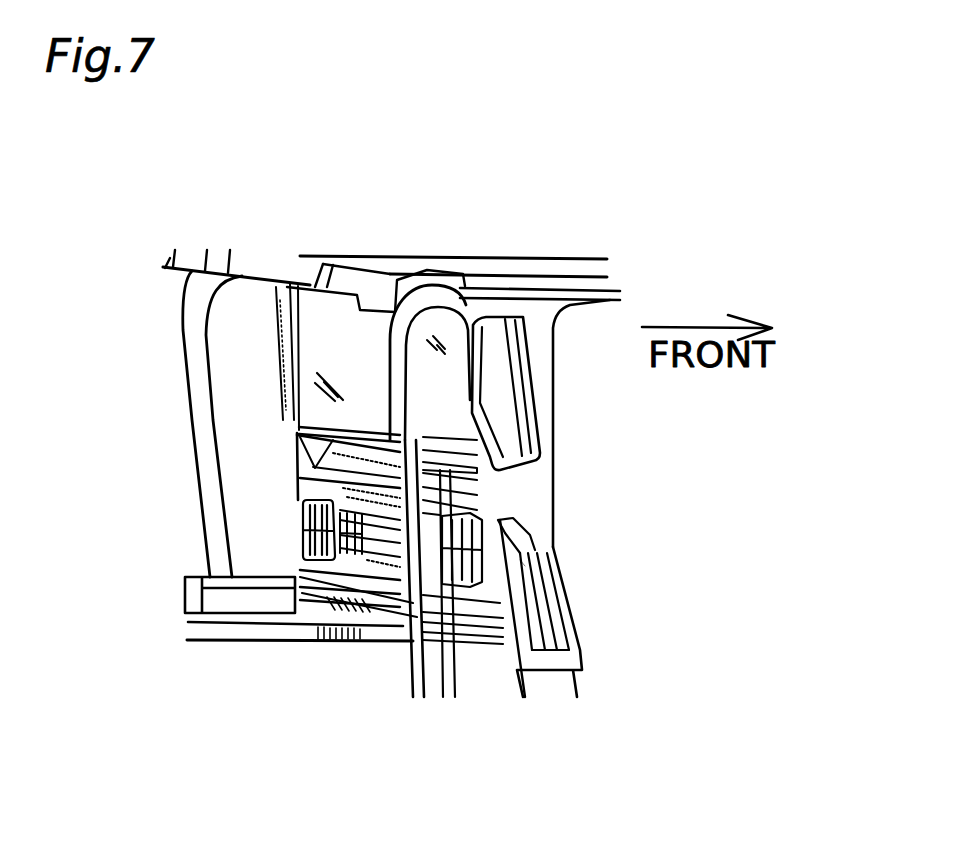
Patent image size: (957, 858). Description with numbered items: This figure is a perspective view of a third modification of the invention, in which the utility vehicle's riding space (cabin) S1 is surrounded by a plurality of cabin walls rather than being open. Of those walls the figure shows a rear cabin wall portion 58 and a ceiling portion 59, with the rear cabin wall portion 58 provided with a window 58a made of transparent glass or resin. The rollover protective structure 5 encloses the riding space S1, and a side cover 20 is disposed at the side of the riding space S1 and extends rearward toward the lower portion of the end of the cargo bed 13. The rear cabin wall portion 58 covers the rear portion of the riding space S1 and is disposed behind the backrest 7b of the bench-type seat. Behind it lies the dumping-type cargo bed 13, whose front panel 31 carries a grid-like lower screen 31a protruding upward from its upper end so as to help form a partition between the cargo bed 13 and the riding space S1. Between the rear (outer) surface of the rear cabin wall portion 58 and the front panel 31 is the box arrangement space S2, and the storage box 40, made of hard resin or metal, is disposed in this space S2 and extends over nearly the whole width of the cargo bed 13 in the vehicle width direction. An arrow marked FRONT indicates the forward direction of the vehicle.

The rollover protective structure (R.O.P.S.) 5 is at (170, 289).
The ceiling portion 59 is at (469, 281).
The window 58a is at (330, 365).
The rear cabin wall portion 58 is at (528, 437).
The side cover 20 is at (487, 675).
The backrest 7b is at (580, 627).
The storage box 40 is at (580, 652).
The box arrangement space S2 is at (513, 568).
The riding space (cabin) S1 is at (707, 481).
The lower screen 31a is at (290, 537).
The front panel 31 is at (342, 640).
The cargo bed 13 is at (183, 667).